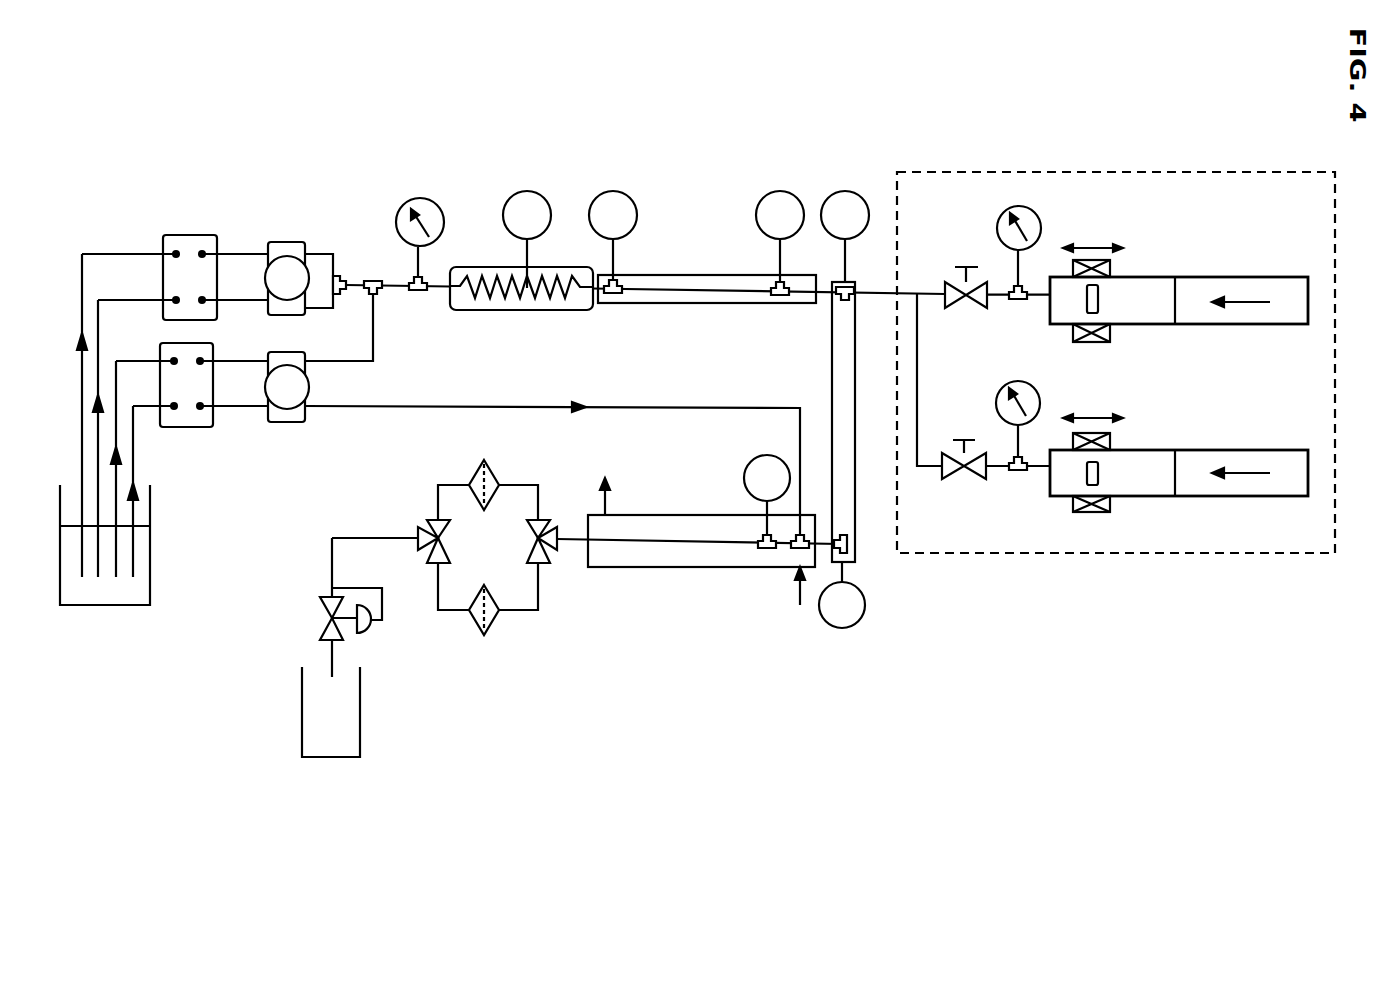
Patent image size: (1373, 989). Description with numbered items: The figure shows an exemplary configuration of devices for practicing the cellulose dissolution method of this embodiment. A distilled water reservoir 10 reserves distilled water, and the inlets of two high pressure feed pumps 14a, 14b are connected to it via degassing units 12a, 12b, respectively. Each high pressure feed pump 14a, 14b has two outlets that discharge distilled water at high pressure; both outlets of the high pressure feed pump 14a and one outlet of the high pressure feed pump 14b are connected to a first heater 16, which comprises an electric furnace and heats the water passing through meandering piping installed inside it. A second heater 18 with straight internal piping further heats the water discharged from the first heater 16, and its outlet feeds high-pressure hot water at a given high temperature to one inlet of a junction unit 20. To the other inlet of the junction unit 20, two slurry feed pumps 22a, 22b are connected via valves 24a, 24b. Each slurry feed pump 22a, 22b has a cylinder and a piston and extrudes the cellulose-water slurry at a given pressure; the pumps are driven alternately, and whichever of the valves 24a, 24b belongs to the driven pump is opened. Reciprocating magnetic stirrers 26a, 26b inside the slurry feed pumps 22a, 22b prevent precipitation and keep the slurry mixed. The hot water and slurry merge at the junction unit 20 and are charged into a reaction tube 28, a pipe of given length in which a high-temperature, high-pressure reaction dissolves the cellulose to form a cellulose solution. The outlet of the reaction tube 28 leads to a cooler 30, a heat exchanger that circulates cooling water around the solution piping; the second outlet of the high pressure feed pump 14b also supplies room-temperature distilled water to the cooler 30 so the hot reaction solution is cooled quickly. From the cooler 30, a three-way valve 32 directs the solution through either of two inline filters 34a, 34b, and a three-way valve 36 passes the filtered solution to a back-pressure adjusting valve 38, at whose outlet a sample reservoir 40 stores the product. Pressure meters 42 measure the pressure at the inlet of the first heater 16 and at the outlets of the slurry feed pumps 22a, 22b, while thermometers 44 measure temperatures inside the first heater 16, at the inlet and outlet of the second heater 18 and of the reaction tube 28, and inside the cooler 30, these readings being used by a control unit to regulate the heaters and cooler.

The distilled water reservoir 10 is at (105, 605).
The degassing unit 12a is at (192, 235).
The degassing unit 12b is at (190, 427).
The high pressure feed pump 14a is at (288, 242).
The high pressure feed pump 14b is at (288, 422).
The first heater 16 is at (520, 310).
The second heater 18 is at (700, 303).
The junction unit 20 is at (853, 284).
The slurry feed pump 22a is at (1140, 276).
The slurry feed pump 22b is at (1162, 450).
The valve 24a is at (964, 266).
The valve 24b is at (963, 439).
The reciprocating magnetic stirrer 26a is at (1109, 338).
The reciprocating magnetic stirrer 26b is at (1110, 508).
The reaction tube 28 is at (832, 350).
The cooler 30 is at (653, 515).
The three-way valve 32 is at (542, 520).
The inline filter 34a is at (485, 460).
The inline filter 34b is at (484, 635).
The three-way valve 36 is at (426, 524).
The back-pressure adjusting valve 38 is at (371, 632).
The sample reservoir 40 is at (360, 731).
The pressure meter 42 is at (420, 197).
The thermometer 44 is at (527, 191).